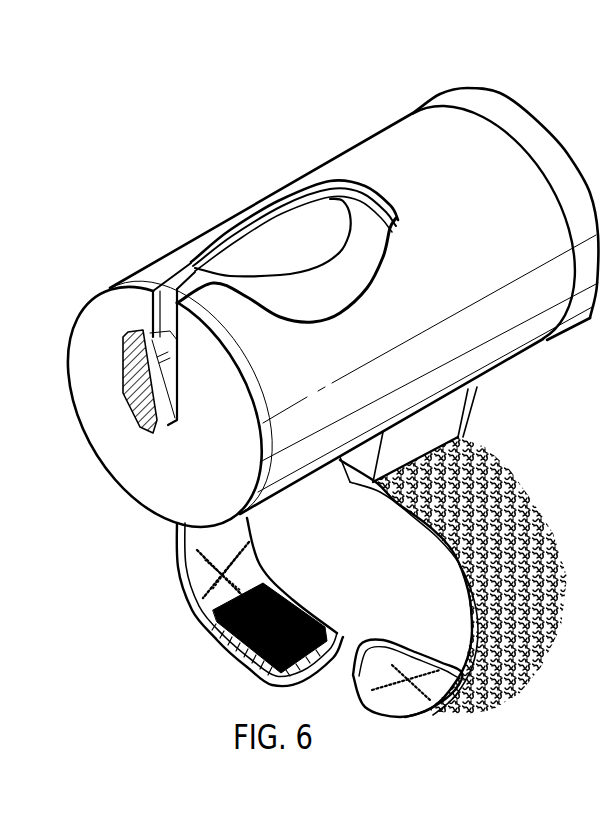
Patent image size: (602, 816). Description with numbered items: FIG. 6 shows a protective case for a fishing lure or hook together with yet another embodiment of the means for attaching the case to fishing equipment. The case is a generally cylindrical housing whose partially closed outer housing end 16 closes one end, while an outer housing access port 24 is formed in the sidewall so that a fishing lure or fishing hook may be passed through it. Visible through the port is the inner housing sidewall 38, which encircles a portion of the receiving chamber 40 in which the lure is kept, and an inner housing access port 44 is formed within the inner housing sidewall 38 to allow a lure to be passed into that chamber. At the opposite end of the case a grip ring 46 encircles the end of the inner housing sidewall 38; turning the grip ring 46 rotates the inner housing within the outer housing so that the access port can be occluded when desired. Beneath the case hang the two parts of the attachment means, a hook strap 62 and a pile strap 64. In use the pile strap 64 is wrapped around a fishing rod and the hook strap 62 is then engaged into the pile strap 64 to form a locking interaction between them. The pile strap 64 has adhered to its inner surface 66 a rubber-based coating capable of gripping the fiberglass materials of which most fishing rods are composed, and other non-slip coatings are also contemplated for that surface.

The outer housing end 16 is at (134, 456).
The outer housing access port 24 is at (230, 214).
The inner housing sidewall 38 is at (350, 281).
The receiving chamber 40 is at (303, 213).
The inner housing access port 44 is at (277, 207).
The grip ring 46 is at (487, 106).
The hook strap 62 is at (221, 648).
The pile strap 64 is at (513, 677).
The inner surface 66 is at (415, 657).